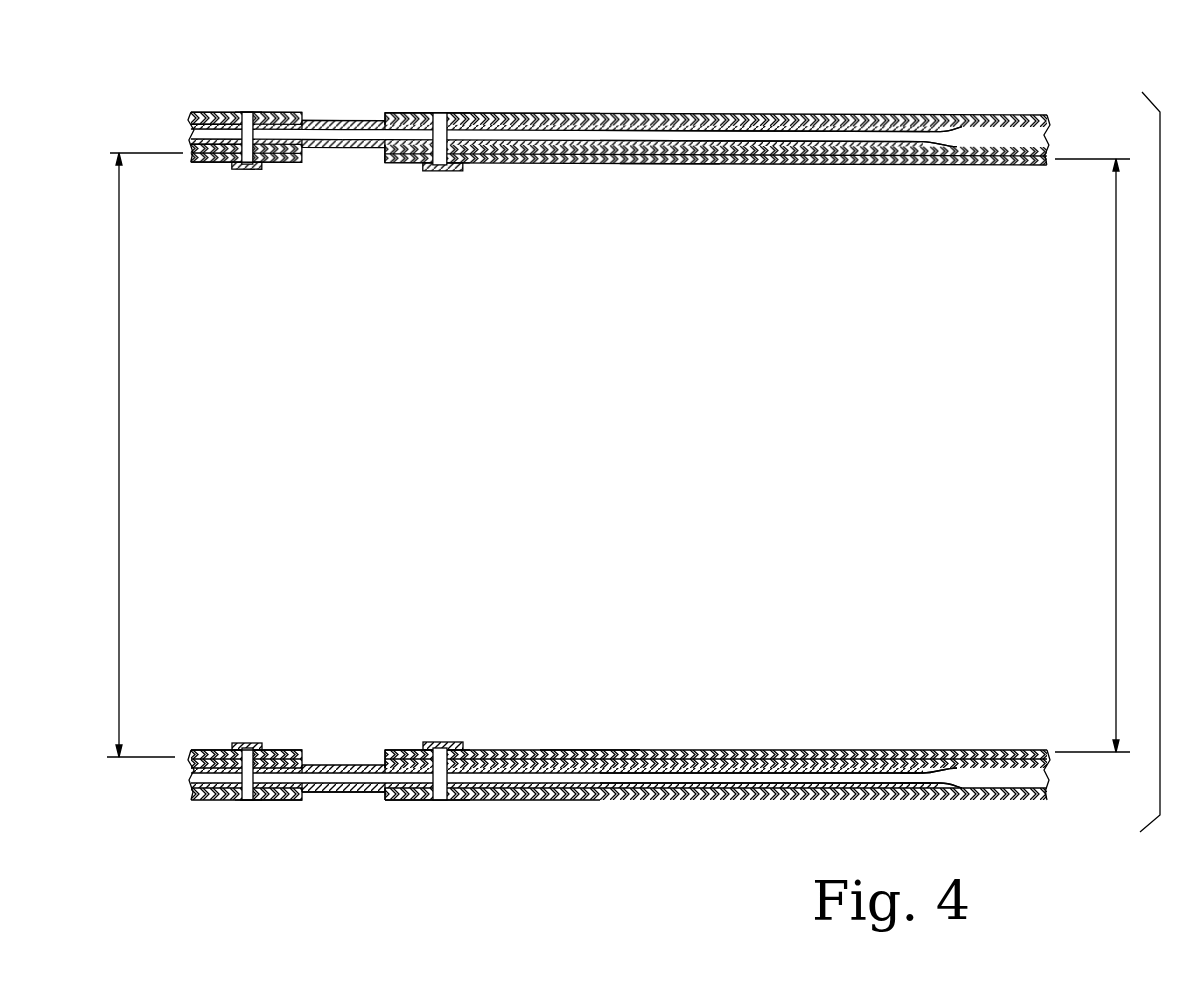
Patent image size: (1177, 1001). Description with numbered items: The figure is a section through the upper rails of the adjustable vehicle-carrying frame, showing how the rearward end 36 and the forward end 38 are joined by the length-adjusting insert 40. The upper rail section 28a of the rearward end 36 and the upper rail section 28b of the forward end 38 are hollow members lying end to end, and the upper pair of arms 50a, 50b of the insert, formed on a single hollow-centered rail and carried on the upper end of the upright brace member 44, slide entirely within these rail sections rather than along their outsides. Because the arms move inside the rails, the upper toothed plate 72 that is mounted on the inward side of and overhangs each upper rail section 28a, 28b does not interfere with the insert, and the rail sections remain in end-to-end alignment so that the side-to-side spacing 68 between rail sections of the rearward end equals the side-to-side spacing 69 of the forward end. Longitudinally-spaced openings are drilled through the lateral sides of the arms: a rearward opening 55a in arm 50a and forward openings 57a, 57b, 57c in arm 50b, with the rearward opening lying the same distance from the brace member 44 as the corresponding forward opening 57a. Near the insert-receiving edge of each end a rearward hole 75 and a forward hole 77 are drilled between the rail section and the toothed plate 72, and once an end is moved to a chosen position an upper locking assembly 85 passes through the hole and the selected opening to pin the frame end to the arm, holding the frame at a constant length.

The upper rail section of the rearward end 28a is at (200, 112).
The upper rail section of the forward end 28b is at (652, 112).
The rearward end of the frame 36 is at (259, 104).
The forward end of the frame 38 is at (508, 103).
The length-adjusting insert 40 is at (316, 105).
The upright brace member 44 is at (363, 140).
The upper rearward arm 50a is at (313, 149).
The upper forward arm 50b is at (360, 149).
The rearward opening 55a is at (246, 112).
The forward opening 57a is at (442, 113).
The forward opening 57b is at (706, 114).
The forward opening 57c is at (873, 114).
The side-to-side spacing of the rearward end 68 is at (118, 396).
The side-to-side spacing of the forward end 69 is at (1116, 398).
The upper toothed plate 72 is at (205, 165).
The rearward hole 75 is at (247, 165).
The forward hole 77 is at (440, 165).
The upper locking assembly 85 is at (254, 169).